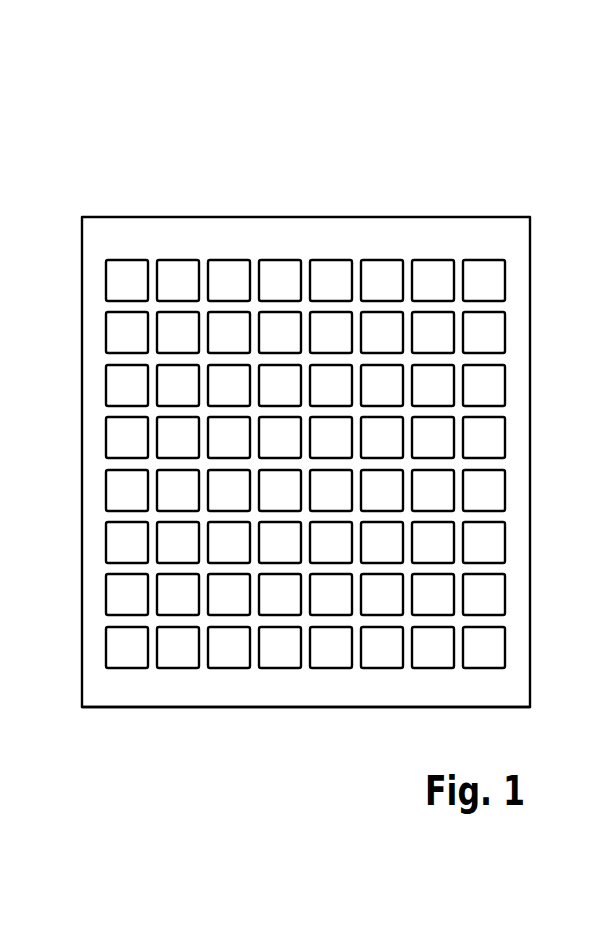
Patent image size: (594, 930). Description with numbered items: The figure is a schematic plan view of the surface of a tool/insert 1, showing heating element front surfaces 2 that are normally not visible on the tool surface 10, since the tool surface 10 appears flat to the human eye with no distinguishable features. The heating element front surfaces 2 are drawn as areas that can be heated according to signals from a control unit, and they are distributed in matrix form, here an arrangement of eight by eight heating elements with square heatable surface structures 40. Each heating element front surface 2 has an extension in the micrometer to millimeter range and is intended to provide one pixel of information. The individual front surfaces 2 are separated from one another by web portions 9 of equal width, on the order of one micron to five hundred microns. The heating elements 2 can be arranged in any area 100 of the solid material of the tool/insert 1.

The tool/insert 1 is at (128, 150).
The area 100 is at (232, 215).
The tool surface 10 is at (330, 688).
The web portion 9 is at (152, 278).
The square heatable surface structure 40 is at (107, 372).
The heating element front surface 2 is at (490, 273).